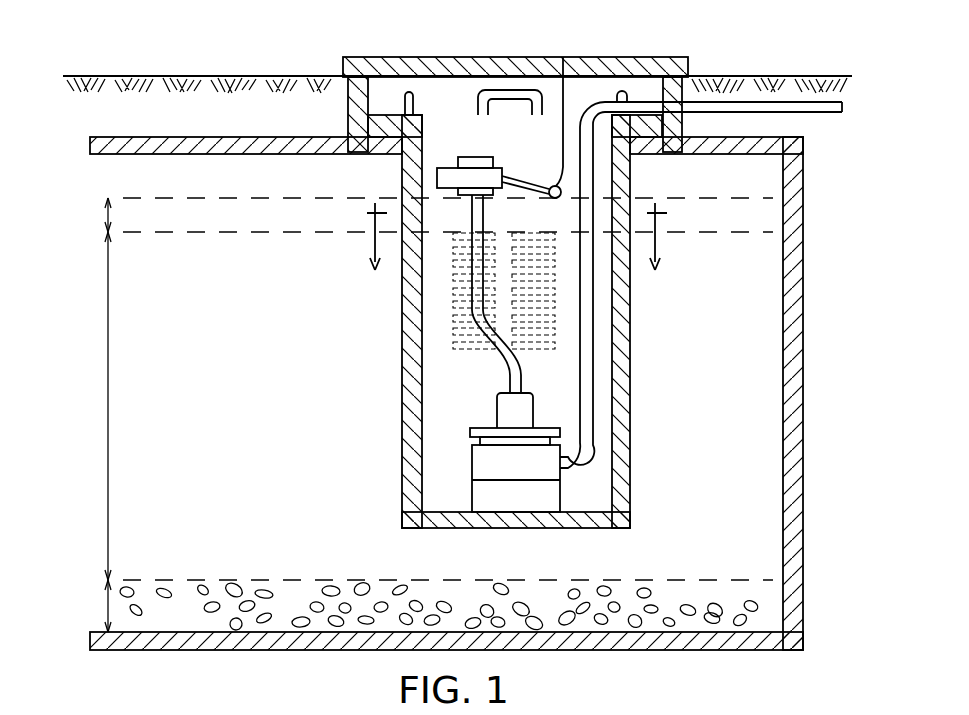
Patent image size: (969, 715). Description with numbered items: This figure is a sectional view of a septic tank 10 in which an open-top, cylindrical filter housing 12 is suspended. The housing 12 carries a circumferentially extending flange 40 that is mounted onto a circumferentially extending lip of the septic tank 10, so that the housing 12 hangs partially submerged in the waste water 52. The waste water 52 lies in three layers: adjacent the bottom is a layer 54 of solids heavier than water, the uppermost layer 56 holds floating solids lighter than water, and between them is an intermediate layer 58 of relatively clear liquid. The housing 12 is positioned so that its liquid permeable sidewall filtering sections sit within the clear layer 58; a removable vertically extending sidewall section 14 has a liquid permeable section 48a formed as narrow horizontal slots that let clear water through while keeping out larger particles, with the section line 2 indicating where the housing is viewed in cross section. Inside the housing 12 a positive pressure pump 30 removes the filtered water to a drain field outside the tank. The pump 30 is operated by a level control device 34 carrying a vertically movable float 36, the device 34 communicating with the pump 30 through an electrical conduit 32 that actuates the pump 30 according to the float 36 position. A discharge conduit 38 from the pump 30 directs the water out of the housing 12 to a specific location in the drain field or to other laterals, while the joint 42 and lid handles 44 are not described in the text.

The septic tank 10 is at (805, 302).
The filter housing 12 is at (631, 364).
The removable vertically extending sidewall section 14 is at (595, 468).
The positive pressure pump 30 is at (513, 502).
The electrical conduit 32 is at (503, 372).
The level control device 34 is at (437, 182).
The float 36 is at (563, 77).
The discharge conduit 38 is at (808, 112).
The flange 40 is at (387, 110).
The joint 42 is at (367, 153).
The lid handles 44 is at (415, 100).
The liquid permeable section 48a is at (452, 306).
The waste water 52 is at (308, 334).
The solids layer 54 is at (102, 607).
The floating solids layer 56 is at (98, 215).
The relatively clear liquid layer 58 is at (112, 427).
The section line 2 is at (516, 256).